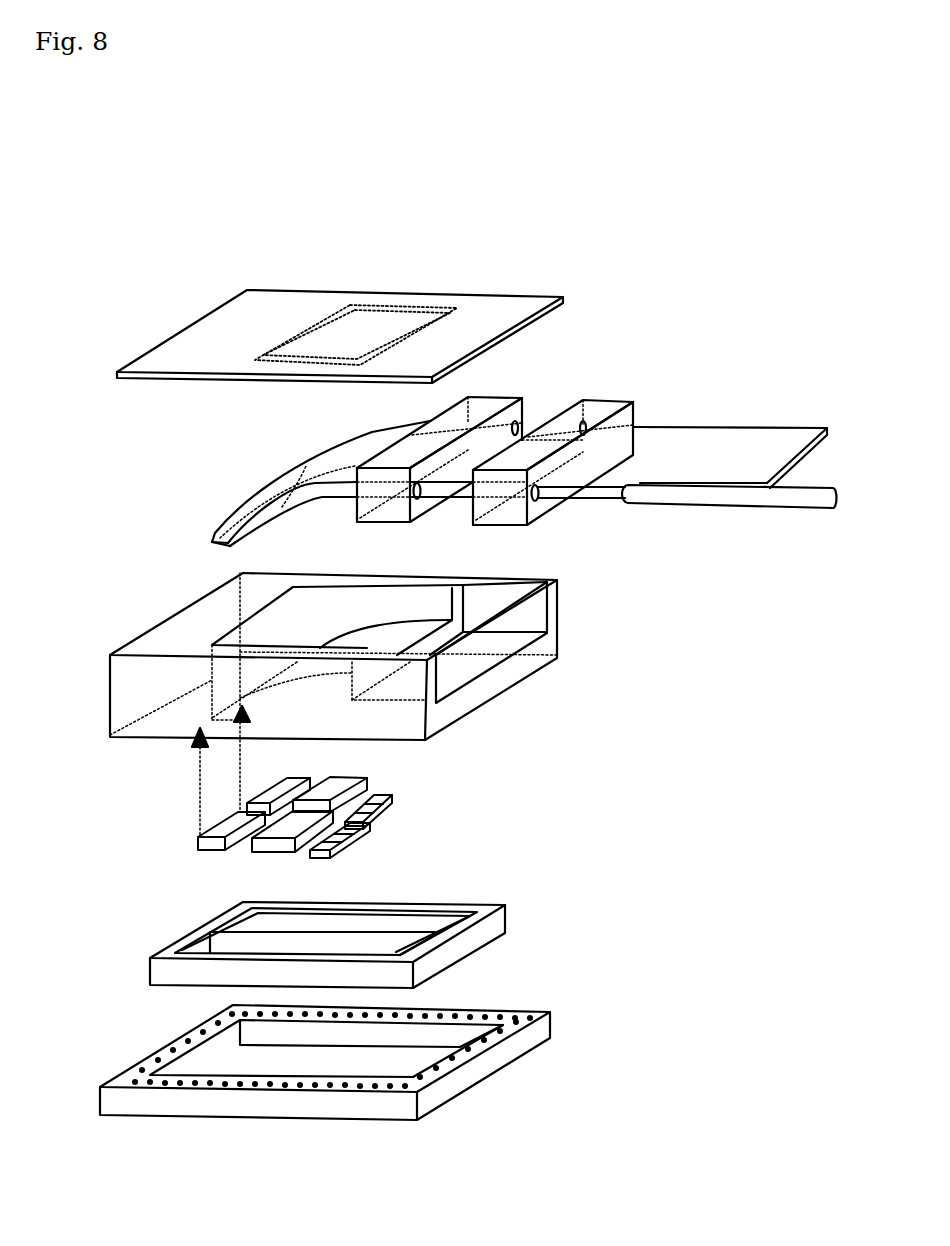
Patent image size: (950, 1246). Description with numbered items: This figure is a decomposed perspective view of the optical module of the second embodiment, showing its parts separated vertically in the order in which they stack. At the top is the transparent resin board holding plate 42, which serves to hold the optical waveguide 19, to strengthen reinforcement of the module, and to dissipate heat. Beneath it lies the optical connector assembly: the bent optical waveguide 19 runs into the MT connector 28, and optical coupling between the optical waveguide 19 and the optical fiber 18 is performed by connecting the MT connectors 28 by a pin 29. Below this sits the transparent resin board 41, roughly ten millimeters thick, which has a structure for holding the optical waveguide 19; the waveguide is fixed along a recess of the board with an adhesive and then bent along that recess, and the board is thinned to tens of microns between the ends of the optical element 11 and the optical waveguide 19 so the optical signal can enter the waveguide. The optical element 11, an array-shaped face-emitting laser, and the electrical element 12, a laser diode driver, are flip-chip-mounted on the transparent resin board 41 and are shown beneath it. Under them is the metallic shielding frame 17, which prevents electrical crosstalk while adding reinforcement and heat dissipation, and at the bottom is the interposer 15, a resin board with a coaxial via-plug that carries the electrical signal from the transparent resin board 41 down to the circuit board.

The transparent resin board holding plate 42 is at (278, 297).
The optical waveguide 19 is at (283, 481).
The MT connector 28 is at (527, 400).
The optical fiber 18 is at (713, 437).
The pin 29 is at (755, 502).
The transparent resin board 41 is at (535, 670).
The electrical element 12 is at (367, 782).
The optical element 11 is at (203, 840).
The metallic shielding frame 17 is at (505, 910).
The interposer 15 is at (498, 1055).